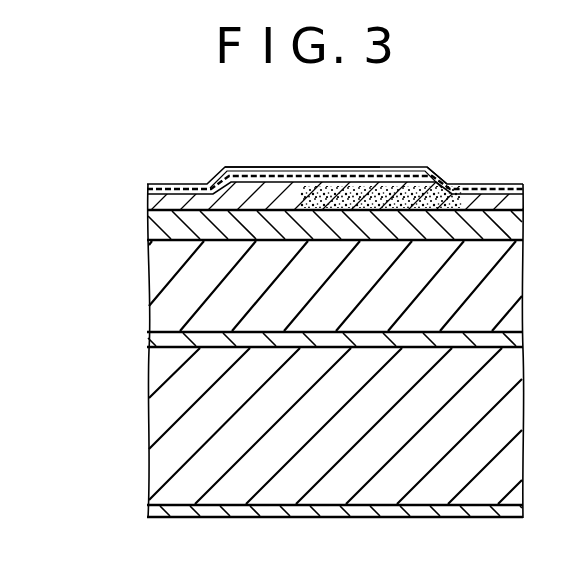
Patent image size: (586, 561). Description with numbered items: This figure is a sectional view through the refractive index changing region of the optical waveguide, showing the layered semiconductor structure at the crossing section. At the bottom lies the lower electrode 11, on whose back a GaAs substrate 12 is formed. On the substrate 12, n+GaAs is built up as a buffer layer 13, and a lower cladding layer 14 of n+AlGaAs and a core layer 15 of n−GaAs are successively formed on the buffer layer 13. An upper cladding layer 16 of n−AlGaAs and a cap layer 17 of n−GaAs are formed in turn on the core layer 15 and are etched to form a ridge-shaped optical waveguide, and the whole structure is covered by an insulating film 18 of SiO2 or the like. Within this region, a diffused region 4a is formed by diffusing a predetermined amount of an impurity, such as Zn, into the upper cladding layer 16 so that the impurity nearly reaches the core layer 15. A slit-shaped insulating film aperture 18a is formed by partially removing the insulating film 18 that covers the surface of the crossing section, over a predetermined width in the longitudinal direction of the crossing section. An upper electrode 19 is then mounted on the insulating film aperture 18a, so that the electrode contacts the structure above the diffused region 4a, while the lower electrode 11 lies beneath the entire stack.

The lower electrode 11 is at (158, 512).
The substrate 12 is at (160, 418).
The buffer layer 13 is at (152, 335).
The lower cladding layer 14 is at (158, 278).
The core layer 15 is at (148, 225).
The upper cladding layer 16 is at (146, 202).
The cap layer 17 is at (292, 166).
The insulating film 18 is at (146, 185).
The insulating film aperture 18a is at (392, 180).
The upper electrode 19 is at (350, 168).
The diffused region 4a is at (440, 170).